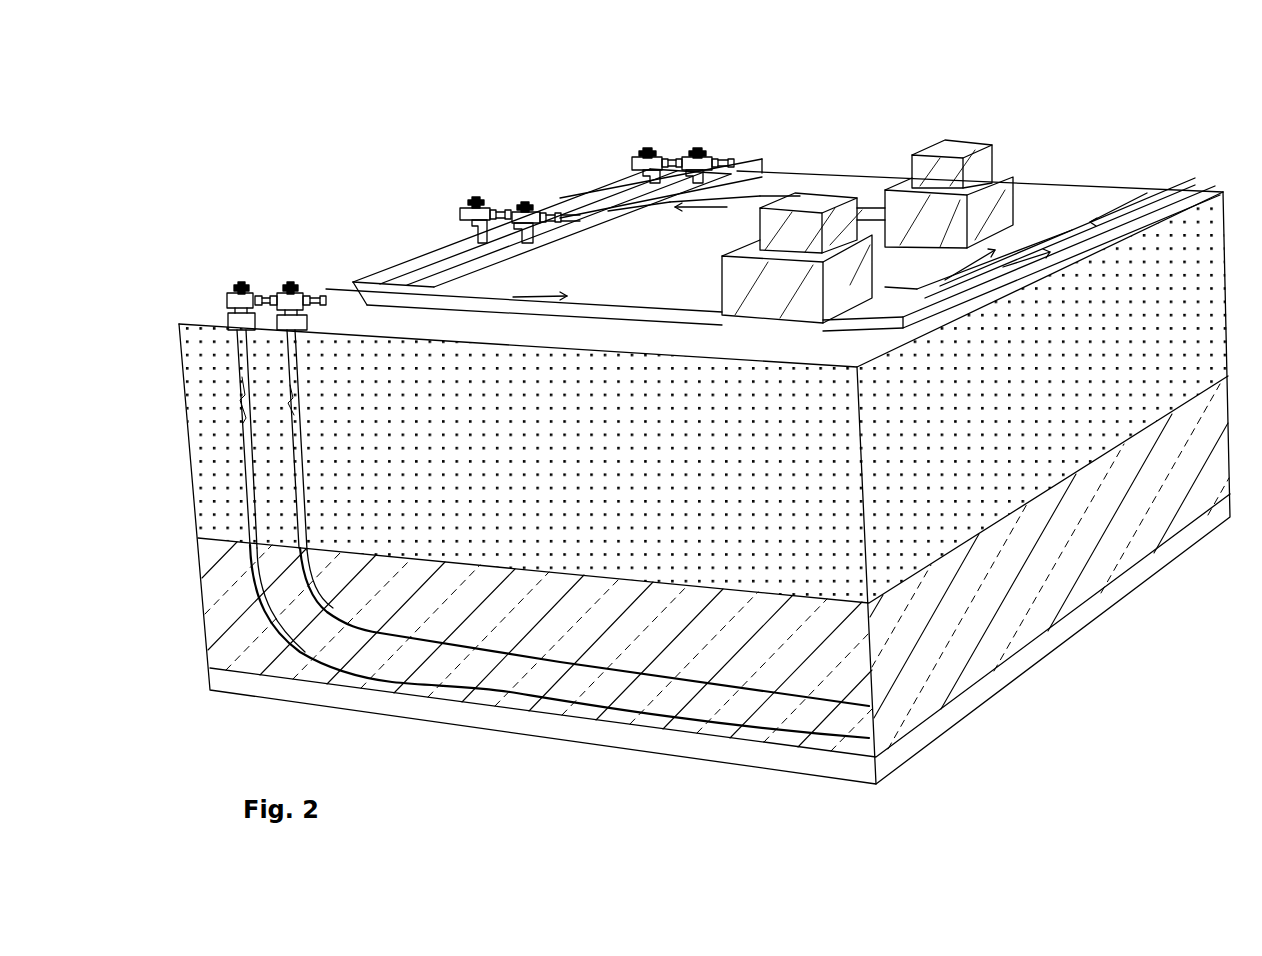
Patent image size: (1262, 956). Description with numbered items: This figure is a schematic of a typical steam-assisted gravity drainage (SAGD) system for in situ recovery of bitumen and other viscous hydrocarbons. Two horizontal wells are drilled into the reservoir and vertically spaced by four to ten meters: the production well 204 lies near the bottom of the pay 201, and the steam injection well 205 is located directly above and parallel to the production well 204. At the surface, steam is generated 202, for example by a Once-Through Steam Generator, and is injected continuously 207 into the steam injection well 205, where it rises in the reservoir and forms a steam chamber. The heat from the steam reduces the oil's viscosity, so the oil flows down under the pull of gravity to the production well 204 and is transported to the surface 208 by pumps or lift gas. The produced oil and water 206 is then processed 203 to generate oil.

The pay 201 is at (957, 665).
The steam generation 202 is at (1020, 188).
The processing of produced oil and water 203 is at (802, 196).
The production well 204 is at (632, 716).
The steam injection well 205 is at (862, 707).
The produced oil and water 206 is at (372, 268).
The continuous steam injection 207 is at (483, 260).
The transport to the surface 208 is at (632, 162).